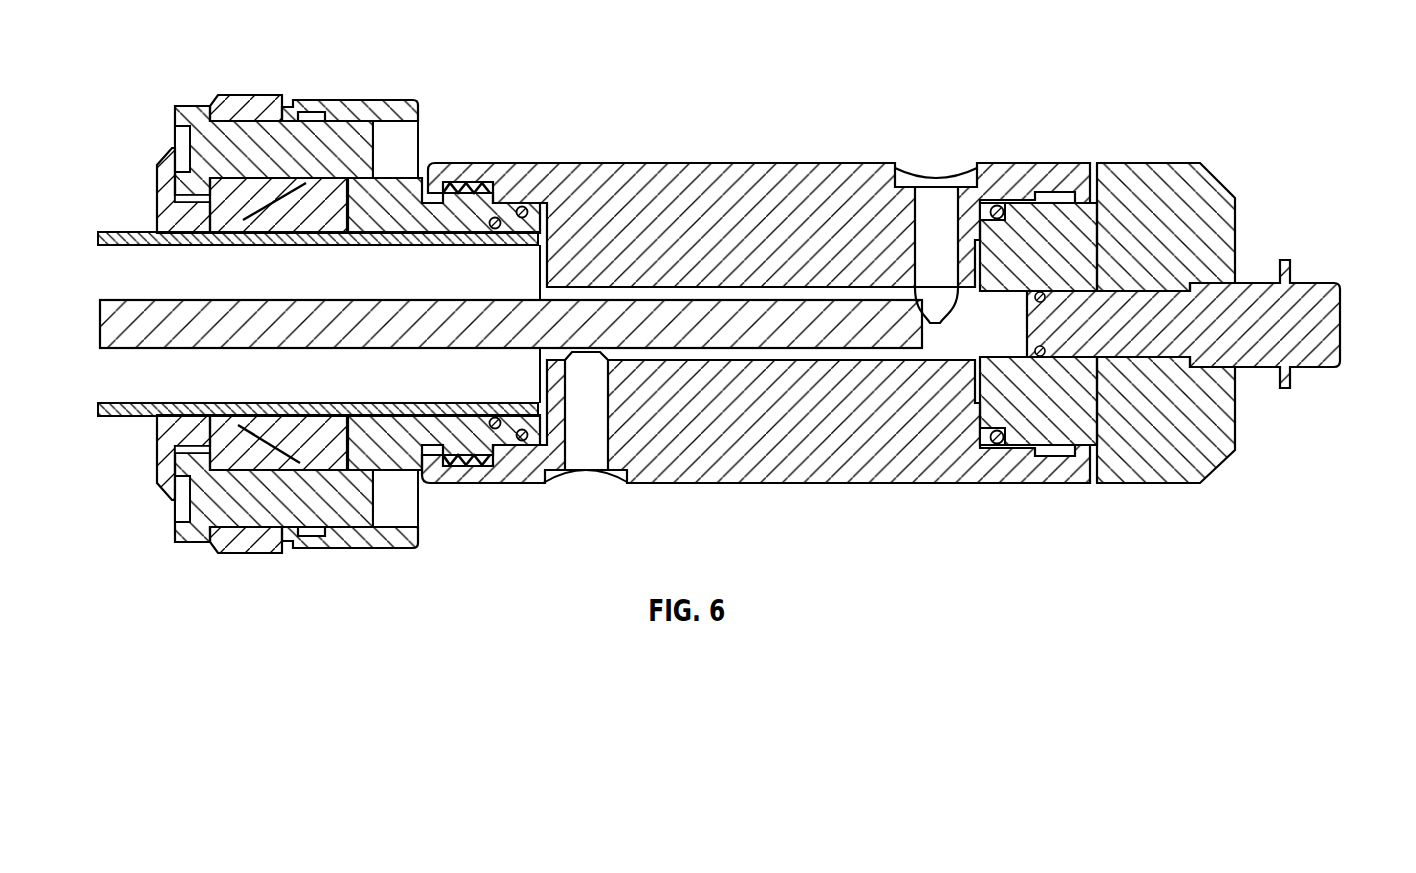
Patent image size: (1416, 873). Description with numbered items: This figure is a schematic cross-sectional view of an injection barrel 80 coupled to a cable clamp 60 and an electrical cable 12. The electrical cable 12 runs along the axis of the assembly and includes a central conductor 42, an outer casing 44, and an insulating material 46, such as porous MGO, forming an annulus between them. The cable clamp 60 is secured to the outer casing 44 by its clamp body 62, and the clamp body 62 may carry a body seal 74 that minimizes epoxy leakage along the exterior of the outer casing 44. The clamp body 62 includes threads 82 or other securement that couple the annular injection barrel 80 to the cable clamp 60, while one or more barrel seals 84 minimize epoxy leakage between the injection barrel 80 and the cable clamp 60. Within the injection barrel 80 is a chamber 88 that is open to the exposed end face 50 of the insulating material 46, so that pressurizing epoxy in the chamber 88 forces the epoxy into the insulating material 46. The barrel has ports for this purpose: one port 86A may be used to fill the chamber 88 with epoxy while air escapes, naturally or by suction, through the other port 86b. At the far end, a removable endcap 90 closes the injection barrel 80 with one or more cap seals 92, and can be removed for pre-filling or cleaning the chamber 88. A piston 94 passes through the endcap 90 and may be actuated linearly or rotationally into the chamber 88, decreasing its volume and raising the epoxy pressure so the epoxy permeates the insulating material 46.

The electrical cable 12 is at (100, 268).
The conductor 42 is at (770, 352).
The outer casing 44 is at (103, 418).
The insulating material 46 is at (152, 383).
The exposed end face 50 is at (548, 268).
The cable clamp 60 is at (285, 80).
The clamp body 62 is at (397, 100).
The body seal 74 is at (497, 232).
The injection barrel 80 is at (840, 163).
The threads 82 is at (472, 184).
The barrel seal 84 is at (526, 207).
The port 86A is at (582, 482).
The port 86b is at (940, 168).
The chamber 88 is at (660, 292).
The endcap 90 is at (1158, 163).
The cap seal 92 is at (999, 207).
The piston 94 is at (1342, 305).